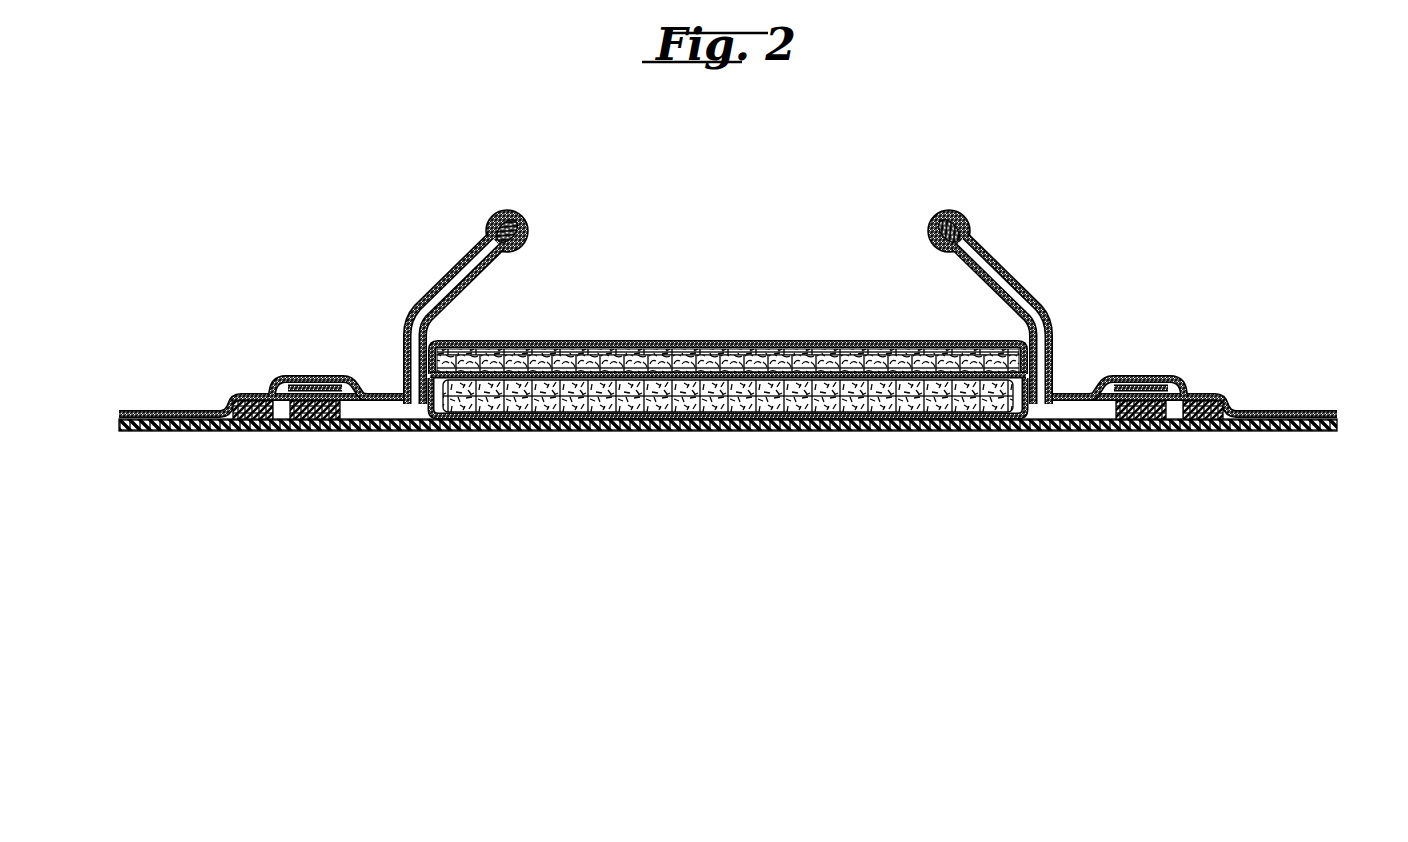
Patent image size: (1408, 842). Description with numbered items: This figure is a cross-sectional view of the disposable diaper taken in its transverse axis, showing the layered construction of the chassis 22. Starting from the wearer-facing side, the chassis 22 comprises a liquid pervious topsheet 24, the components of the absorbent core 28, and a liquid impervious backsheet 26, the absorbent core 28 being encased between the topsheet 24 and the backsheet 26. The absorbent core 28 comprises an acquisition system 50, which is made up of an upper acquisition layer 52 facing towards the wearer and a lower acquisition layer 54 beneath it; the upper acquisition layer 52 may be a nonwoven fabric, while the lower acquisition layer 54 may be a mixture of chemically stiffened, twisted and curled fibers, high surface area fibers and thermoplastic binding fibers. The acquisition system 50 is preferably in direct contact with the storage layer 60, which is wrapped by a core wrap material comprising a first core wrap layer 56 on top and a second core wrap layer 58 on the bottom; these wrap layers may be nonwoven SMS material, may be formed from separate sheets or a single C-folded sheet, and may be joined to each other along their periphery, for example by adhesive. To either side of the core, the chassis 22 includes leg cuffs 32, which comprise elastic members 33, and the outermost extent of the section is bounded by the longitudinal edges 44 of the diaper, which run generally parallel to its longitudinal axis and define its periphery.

The chassis 22 is at (785, 294).
The topsheet 24 is at (654, 342).
The backsheet 26 is at (683, 420).
The absorbent core 28 is at (1077, 372).
The leg cuffs 32 is at (433, 262).
The elastic members 33 is at (514, 220).
The longitudinal edges 44 is at (111, 438).
The acquisition system 50 is at (1053, 352).
The upper acquisition layer 52 is at (570, 352).
The lower acquisition layer 54 is at (525, 362).
The first core wrap layer 56 is at (858, 370).
The second core wrap layer 58 is at (800, 432).
The storage layer 60 is at (546, 400).